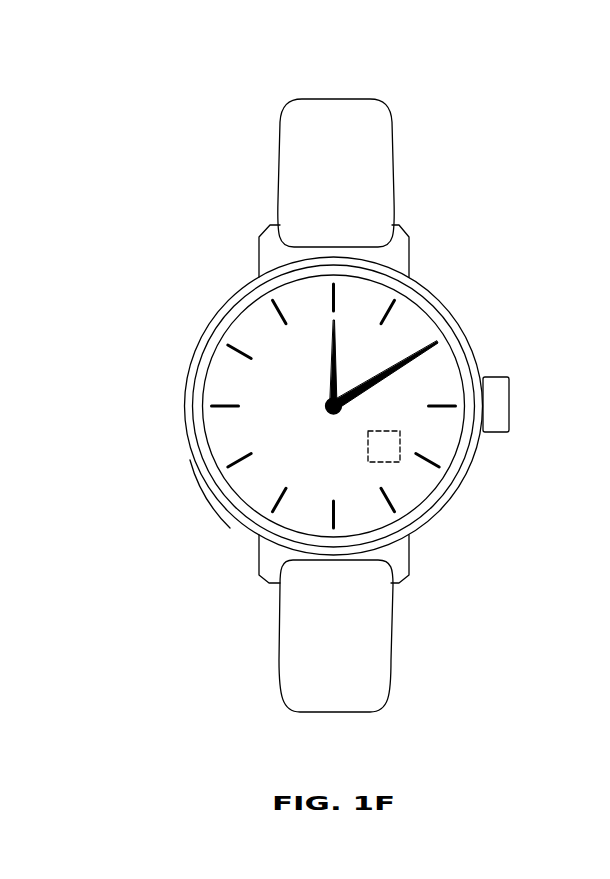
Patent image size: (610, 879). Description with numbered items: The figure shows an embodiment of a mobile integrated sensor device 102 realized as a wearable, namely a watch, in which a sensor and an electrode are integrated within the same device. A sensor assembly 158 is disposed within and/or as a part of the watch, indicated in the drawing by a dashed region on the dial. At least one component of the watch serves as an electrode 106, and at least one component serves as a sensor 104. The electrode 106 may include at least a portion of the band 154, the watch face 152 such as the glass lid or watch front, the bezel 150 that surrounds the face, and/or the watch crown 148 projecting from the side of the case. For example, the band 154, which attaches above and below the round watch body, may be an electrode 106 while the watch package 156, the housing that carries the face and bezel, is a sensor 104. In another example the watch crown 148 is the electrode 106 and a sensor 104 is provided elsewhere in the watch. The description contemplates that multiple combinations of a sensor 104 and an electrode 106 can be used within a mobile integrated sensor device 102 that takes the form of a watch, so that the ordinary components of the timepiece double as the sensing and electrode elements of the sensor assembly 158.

The mobile integrated sensor device 102 is at (361, 405).
The sensor 104 is at (398, 553).
The electrode 106 is at (393, 572).
The watch crown 148 is at (510, 402).
The bezel 150 is at (432, 313).
The watch face 152 is at (275, 345).
The band 154 is at (357, 112).
The watch package 156 is at (200, 515).
The sensor assembly 158 is at (400, 437).